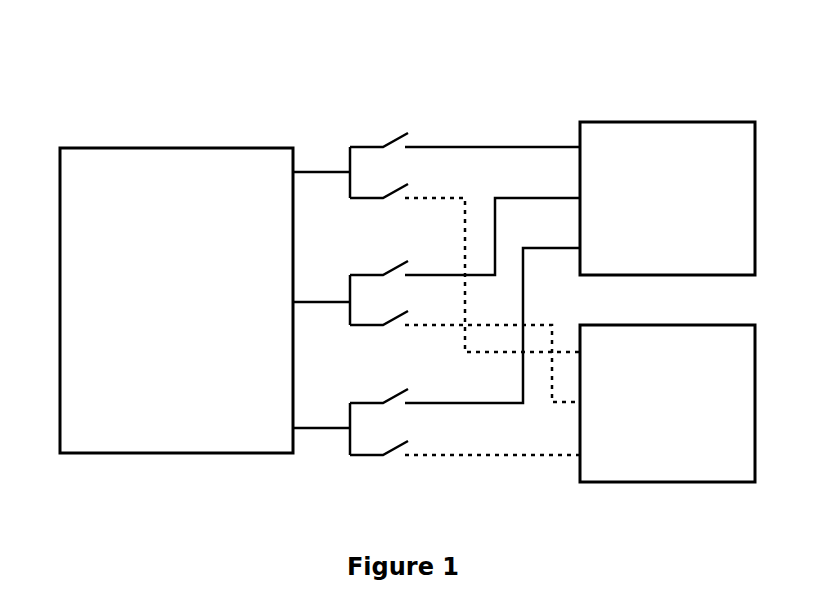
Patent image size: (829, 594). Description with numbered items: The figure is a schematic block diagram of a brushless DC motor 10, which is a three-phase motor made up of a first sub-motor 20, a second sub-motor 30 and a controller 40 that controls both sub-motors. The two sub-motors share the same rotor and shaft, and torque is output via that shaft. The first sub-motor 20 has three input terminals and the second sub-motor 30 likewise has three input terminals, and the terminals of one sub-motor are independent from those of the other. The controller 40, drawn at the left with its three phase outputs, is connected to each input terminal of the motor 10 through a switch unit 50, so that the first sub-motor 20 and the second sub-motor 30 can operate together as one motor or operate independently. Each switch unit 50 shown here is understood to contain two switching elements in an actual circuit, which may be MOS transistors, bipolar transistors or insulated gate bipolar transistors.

The brushless DC motor 10 is at (312, 93).
The first sub-motor 20 is at (667, 198).
The second sub-motor 30 is at (667, 403).
The controller 40 is at (176, 300).
The switch unit 50 is at (392, 135).